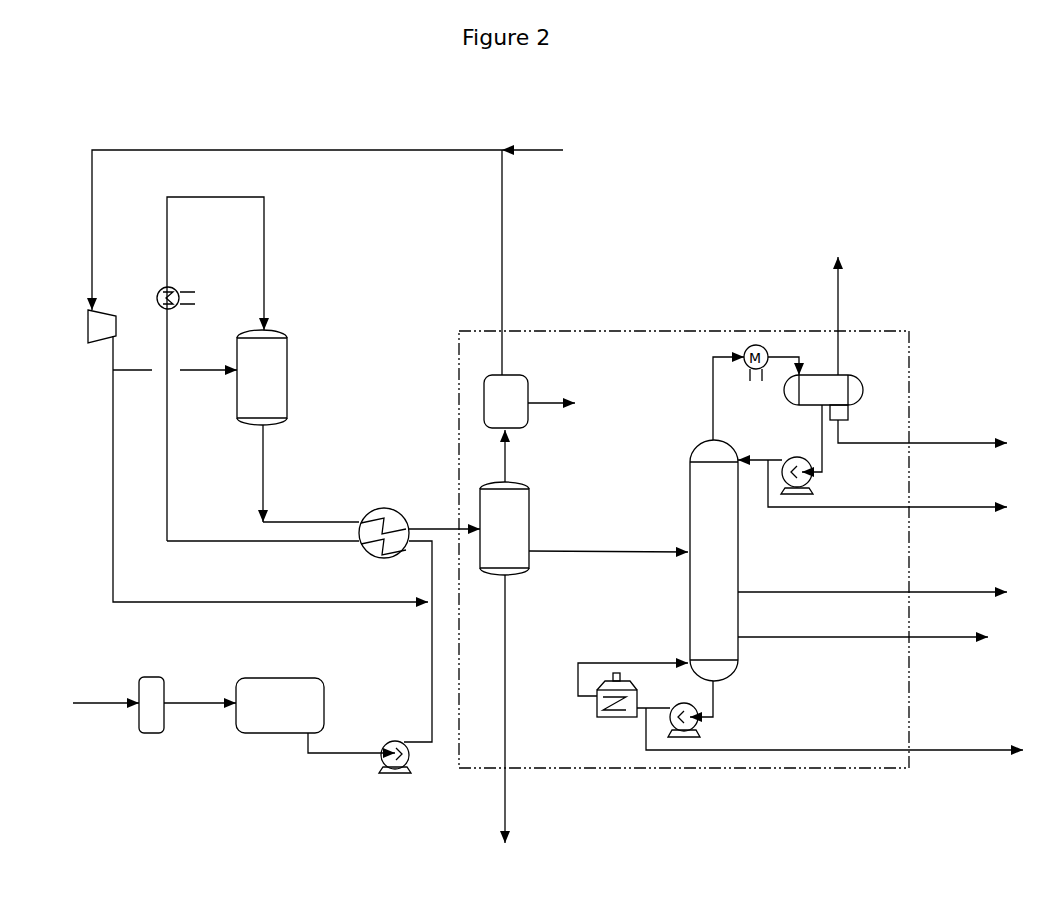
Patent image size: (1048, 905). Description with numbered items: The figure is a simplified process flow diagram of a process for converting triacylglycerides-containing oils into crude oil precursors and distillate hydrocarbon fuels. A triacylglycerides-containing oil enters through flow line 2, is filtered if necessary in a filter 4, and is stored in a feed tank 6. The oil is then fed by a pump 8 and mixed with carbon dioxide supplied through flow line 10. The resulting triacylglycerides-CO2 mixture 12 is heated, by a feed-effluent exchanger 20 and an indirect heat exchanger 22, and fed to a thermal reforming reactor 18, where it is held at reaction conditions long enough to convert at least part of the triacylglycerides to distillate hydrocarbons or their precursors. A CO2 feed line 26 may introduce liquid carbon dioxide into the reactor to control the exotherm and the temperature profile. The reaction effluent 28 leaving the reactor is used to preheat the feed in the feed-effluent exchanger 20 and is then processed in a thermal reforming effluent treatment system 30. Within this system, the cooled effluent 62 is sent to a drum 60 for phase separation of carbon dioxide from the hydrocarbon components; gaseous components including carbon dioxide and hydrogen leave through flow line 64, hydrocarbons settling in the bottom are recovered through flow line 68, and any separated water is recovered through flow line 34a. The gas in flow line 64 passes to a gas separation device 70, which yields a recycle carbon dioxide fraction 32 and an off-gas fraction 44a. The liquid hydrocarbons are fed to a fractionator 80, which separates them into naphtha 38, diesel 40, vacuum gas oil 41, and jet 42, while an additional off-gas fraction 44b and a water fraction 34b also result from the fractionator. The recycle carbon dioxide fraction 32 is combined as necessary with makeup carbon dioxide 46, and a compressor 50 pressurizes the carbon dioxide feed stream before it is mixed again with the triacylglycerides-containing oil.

The flow line 2 is at (80, 703).
The filter 4 is at (140, 678).
The feed tank 6 is at (262, 679).
The pump 8 is at (386, 744).
The flow line 10 is at (268, 602).
The triacylglycerides-CO2 mixture 12 is at (167, 507).
The thermal reforming reactor 18 is at (238, 348).
The feed-effluent exchanger 20 is at (374, 512).
The indirect heat exchanger 22 is at (158, 290).
The CO2 feed line 26 is at (216, 370).
The reaction effluent 28 is at (262, 492).
The thermal reforming effluent treatment system 30 is at (662, 330).
The carbon dioxide fraction 32 is at (502, 230).
The flow line 34a is at (508, 818).
The water fraction 34b is at (990, 443).
The naphtha 38 is at (986, 507).
The diesel 40 is at (988, 592).
The vacuum gas oil (VGO) 41 is at (990, 750).
The jet 42 is at (966, 635).
The off-gas fraction 44a is at (558, 403).
The off-gas fraction 44b is at (836, 320).
The makeup carbon dioxide 46 is at (550, 150).
The compressor 50 is at (92, 222).
The drum 60 is at (531, 497).
The cooled effluent 62 is at (444, 527).
The flow line 64 is at (510, 464).
The flow line 68 is at (582, 551).
The gas separation device 70 is at (530, 377).
The fractionator 80 is at (694, 452).